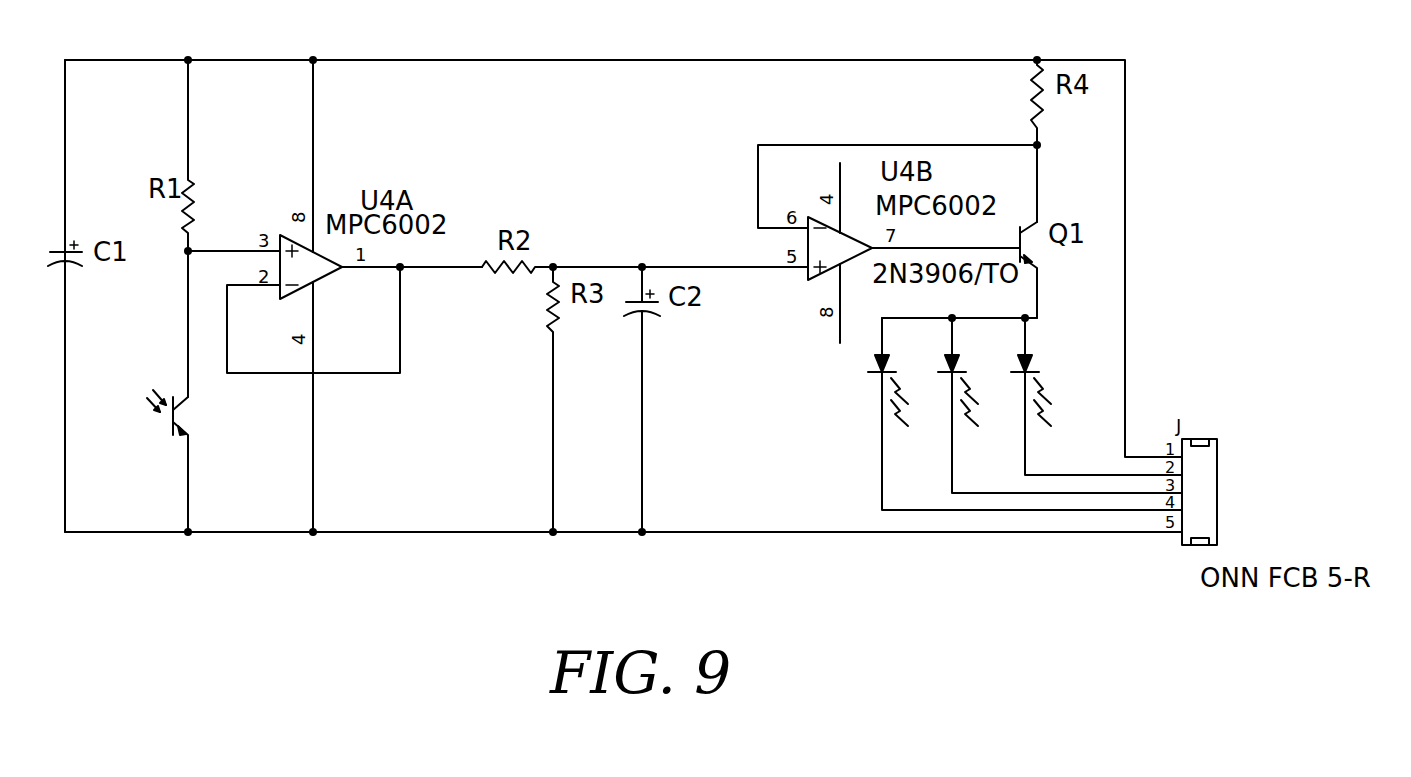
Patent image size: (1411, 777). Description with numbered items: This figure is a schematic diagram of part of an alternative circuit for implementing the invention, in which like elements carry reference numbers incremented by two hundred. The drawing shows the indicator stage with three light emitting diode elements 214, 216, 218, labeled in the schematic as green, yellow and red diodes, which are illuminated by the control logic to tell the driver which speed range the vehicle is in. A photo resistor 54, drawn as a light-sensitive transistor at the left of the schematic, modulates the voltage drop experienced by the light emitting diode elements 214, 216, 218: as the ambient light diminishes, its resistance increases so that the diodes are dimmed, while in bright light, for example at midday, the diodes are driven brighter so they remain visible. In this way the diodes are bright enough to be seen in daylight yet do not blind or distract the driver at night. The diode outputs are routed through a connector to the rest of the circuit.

The photo resistor 54 is at (177, 440).
The light emitting diode element 214 is at (847, 368).
The light emitting diode element 216 is at (963, 427).
The light emitting diode element 218 is at (1052, 338).